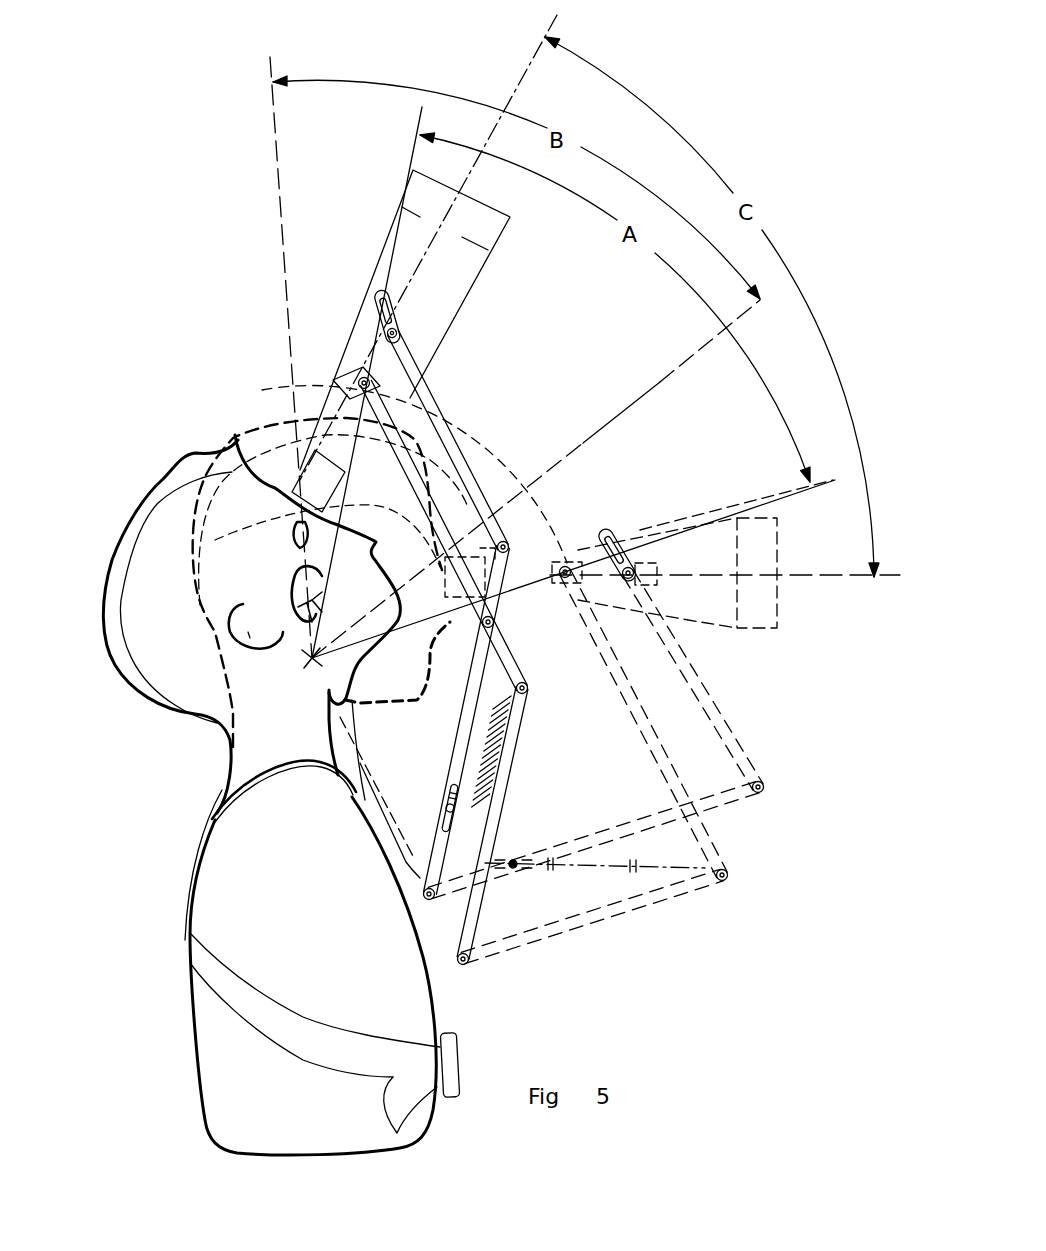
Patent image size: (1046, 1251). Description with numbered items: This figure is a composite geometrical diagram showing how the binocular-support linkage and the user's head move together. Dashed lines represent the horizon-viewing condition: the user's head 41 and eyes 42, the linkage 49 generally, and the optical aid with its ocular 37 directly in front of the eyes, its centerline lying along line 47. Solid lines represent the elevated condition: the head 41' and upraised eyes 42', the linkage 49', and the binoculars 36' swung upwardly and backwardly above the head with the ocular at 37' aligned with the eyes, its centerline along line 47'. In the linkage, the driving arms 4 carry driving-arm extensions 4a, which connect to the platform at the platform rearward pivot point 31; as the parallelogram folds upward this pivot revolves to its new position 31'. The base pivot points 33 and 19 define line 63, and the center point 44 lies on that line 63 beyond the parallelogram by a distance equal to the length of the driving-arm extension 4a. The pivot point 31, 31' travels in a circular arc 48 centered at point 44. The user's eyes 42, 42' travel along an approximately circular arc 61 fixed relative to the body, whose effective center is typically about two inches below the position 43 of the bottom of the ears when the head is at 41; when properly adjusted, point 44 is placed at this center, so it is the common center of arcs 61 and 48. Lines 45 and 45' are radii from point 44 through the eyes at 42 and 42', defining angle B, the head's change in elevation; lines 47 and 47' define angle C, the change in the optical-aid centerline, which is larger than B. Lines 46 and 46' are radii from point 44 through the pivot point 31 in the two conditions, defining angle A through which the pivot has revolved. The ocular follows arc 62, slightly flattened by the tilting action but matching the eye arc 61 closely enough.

The driving arm 4 is at (510, 652).
The driving-arm extension 4a is at (432, 392).
The pivoting joint 19 is at (476, 960).
The platform rearward pivot point 31 is at (604, 538).
The platform rearward pivot point (elevated position) 31' is at (341, 363).
The pivoting joint 33 is at (422, 890).
The binoculars (elevated viewing position) 36' is at (417, 320).
The ocular 37 is at (469, 546).
The ocular (elevated position) 37' is at (294, 453).
The user's head (horizon-viewing position) 41 is at (291, 582).
The user's head (elevated viewing position) 41' is at (136, 626).
The user's eyes (horizon-viewing position) 42 is at (405, 662).
The user's eyes (elevated viewing position) 42' is at (275, 592).
The position of the bottom of the user's ears 43 is at (300, 608).
The center point 44 is at (316, 662).
The radius line (horizon-viewing) 45 is at (536, 479).
The radius line (elevated viewing) 45' is at (274, 357).
The radius line through pivot point (horizon-viewing) 46 is at (573, 559).
The radius line through pivot point (elevated) 46' is at (367, 382).
The optical-aid centerline (horizon-viewing) 47 is at (725, 555).
The optical-aid centerline (elevated) 47' is at (428, 247).
The arc 48 is at (488, 441).
The linkage (horizon-viewing position) 49 is at (595, 745).
The linkage (elevated viewing position) 49' is at (525, 823).
The eye-movement arc 61 is at (250, 530).
The ocular arc 62 is at (275, 503).
The base line 63 is at (392, 782).